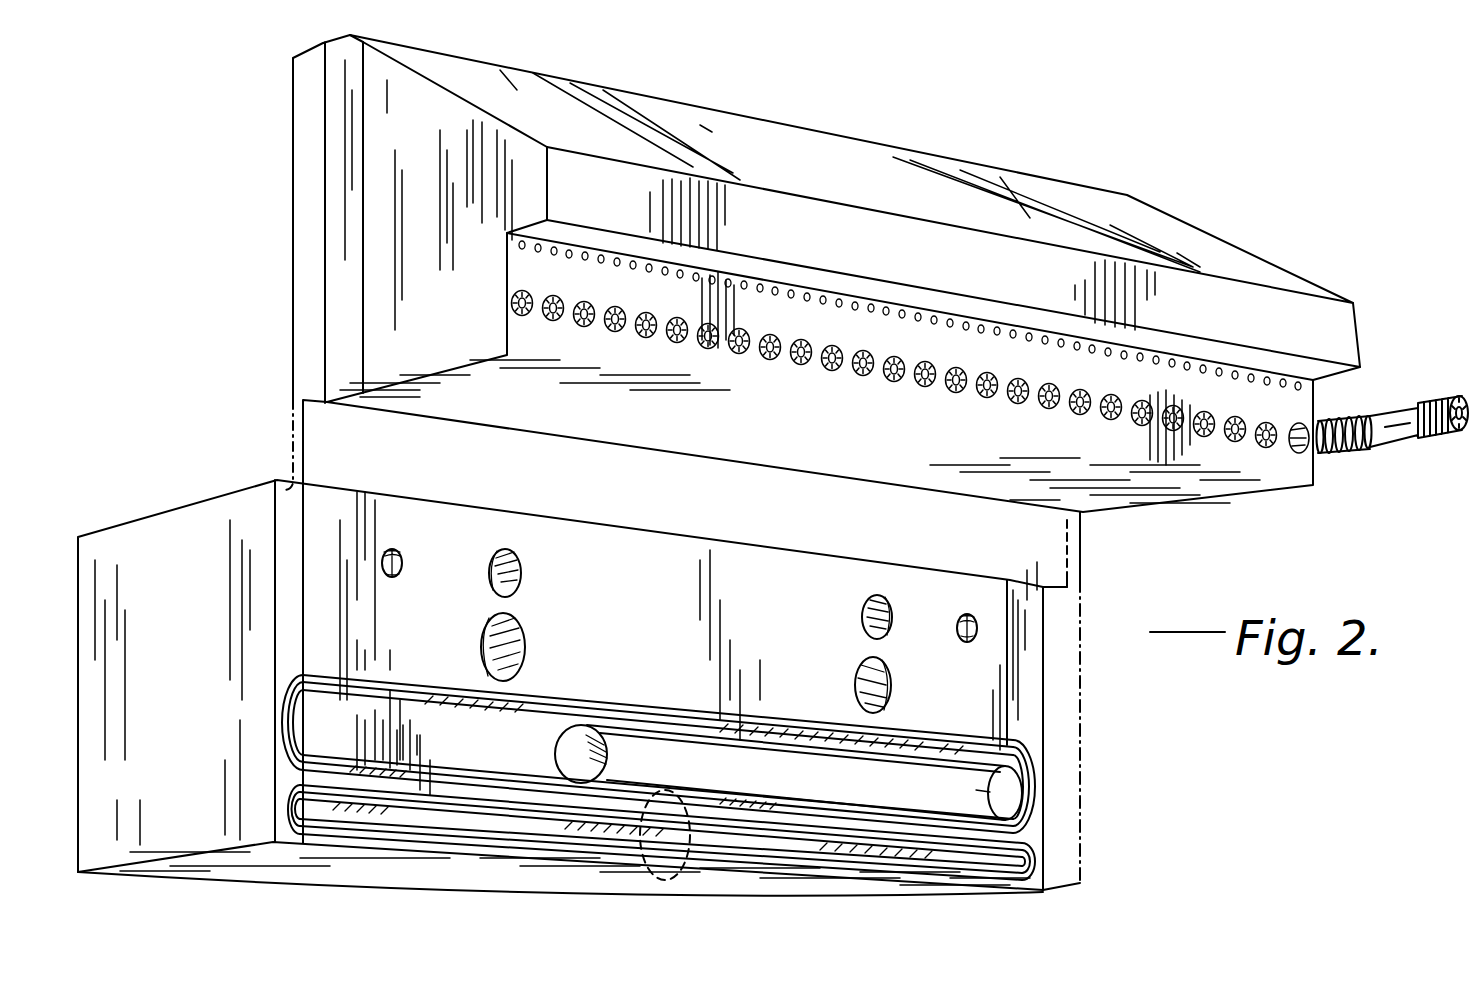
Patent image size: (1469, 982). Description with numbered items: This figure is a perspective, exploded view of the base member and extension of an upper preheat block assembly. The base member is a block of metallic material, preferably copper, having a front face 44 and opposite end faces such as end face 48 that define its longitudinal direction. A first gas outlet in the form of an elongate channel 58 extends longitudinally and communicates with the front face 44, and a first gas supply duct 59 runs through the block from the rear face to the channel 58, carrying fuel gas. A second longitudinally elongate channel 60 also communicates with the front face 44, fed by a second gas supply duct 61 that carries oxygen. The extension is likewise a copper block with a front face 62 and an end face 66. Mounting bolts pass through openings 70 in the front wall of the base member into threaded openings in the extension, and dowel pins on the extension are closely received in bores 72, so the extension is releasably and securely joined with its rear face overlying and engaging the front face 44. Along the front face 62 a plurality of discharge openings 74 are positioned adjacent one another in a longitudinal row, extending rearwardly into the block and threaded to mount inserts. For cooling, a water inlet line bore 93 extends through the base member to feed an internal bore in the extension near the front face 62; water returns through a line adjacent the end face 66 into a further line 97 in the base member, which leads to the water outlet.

The front face 44 is at (618, 541).
The end face 48 is at (137, 855).
The first gas outlet channel 58 is at (500, 822).
The first gas supply duct 59 is at (660, 850).
The second gas outlet channel 60 is at (730, 736).
The second gas supply duct 61 is at (600, 770).
The front face of the extension 62 is at (1340, 326).
The end face of the extension 66 is at (355, 166).
The openings 70 is at (860, 690).
The bores 72 is at (862, 620).
The discharge openings 74 is at (1237, 445).
The water inlet line bore 93 is at (968, 643).
The further line 97 is at (402, 566).